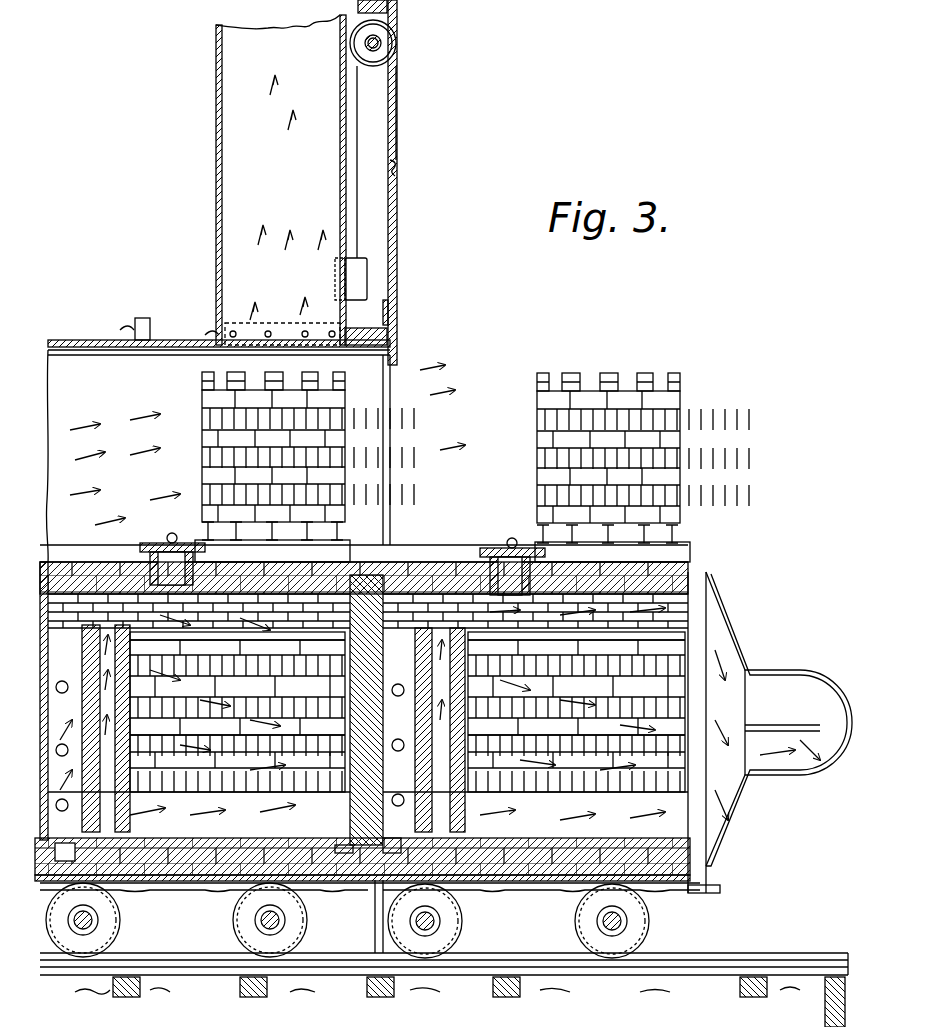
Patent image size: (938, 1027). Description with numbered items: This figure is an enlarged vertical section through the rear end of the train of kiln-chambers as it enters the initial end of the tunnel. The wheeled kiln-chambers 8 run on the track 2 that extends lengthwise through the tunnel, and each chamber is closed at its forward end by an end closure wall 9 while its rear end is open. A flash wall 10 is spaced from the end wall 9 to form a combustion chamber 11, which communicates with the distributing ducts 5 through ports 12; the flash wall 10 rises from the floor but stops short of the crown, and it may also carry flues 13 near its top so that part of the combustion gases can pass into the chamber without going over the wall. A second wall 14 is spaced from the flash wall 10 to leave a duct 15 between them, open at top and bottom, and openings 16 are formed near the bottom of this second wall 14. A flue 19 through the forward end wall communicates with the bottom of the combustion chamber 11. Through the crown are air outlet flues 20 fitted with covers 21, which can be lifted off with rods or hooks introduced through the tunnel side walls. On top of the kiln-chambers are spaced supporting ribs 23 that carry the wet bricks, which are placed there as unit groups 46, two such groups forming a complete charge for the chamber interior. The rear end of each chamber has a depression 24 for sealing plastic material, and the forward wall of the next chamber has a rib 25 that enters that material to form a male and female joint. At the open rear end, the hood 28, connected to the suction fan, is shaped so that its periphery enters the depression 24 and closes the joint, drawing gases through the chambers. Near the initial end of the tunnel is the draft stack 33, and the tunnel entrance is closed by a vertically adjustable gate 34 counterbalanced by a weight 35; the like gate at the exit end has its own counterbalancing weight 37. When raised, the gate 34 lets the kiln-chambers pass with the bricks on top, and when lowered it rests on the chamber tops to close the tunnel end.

The track 2 is at (218, 970).
The distributing ducts 5 is at (58, 843).
The wheeled kiln-chambers 8 is at (185, 878).
The end closure wall 9 is at (366, 710).
The flash wall 10 is at (368, 814).
The combustion chamber 11 is at (232, 746).
The ports 12 is at (401, 837).
The flues 13 is at (82, 655).
The second wall 14 is at (407, 712).
The duct 15 is at (407, 654).
The openings 16 is at (407, 728).
The flue 19 is at (337, 840).
The air outlet flues 20 is at (340, 573).
The covers 21 is at (165, 542).
The supporting ribs 23 is at (208, 528).
The depression 24 is at (660, 568).
The rib 25 is at (375, 560).
The hood 28 is at (732, 612).
The stack 33 is at (216, 245).
The gate 34 is at (392, 288).
The weight 35 is at (367, 270).
The counterbalancing weight 37 is at (378, 940).
The unit groups 46 is at (345, 440).